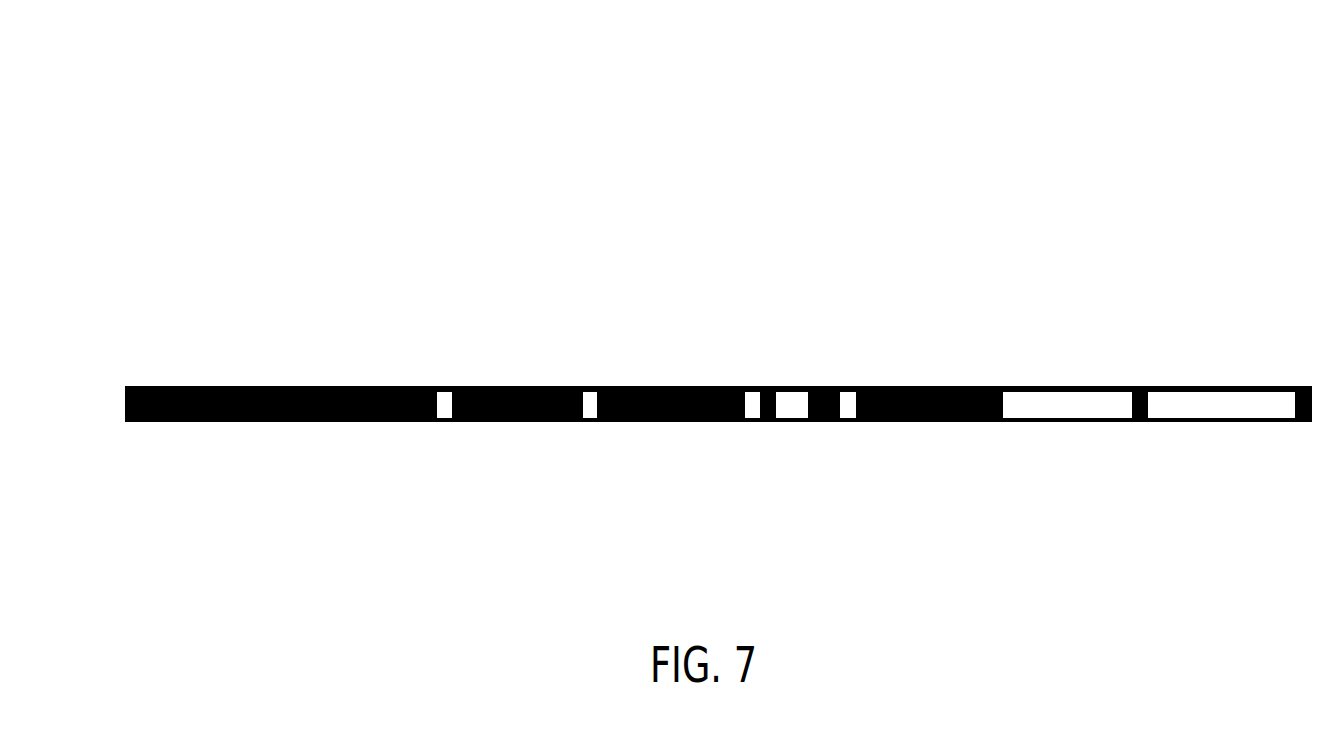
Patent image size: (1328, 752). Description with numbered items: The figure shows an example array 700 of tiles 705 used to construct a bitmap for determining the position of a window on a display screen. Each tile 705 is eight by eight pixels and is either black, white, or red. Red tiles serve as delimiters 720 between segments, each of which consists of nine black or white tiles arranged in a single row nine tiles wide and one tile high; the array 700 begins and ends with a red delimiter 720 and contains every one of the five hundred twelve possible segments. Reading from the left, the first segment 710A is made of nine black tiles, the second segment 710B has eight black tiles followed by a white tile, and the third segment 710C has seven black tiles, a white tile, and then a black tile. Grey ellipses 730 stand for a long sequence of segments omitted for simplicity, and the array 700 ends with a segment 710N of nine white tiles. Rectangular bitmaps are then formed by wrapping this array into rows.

The array 700 is at (718, 301).
The tile 705 is at (443, 421).
The first segment 710A is at (287, 367).
The second segment 710B is at (443, 367).
The third segment 710C is at (607, 367).
The last segment 710N is at (1288, 367).
The delimiter 720 is at (626, 387).
The grey ellipses 730 is at (925, 422).